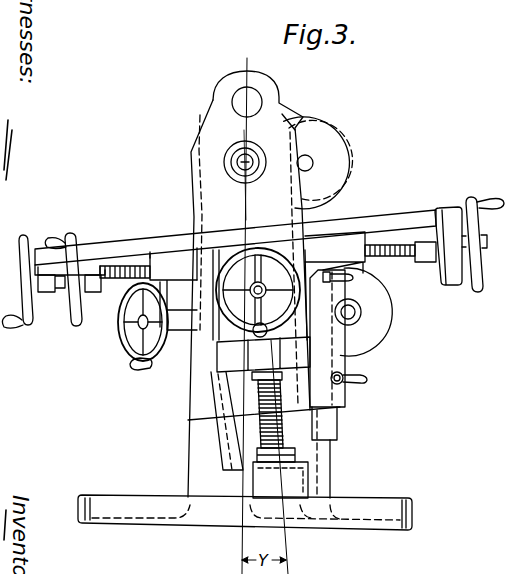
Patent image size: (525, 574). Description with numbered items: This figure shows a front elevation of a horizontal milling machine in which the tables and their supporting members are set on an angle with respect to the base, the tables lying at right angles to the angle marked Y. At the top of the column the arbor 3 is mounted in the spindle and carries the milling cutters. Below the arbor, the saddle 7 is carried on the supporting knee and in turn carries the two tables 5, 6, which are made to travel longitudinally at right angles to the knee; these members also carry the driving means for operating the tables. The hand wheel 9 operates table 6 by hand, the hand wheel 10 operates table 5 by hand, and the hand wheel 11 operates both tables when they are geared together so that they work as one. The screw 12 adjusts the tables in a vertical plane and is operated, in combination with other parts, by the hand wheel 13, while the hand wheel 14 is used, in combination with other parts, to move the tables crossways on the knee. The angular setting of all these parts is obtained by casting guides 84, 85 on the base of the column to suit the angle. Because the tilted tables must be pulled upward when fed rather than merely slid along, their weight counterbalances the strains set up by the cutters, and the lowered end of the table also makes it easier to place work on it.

The arbor 3 is at (238, 158).
The table 5 is at (94, 292).
The table 6 is at (47, 292).
The saddle 7 is at (163, 250).
The hand wheel 9 is at (26, 236).
The hand wheel 10 is at (71, 232).
The hand wheel 11 is at (482, 292).
The screw 12 is at (283, 420).
The hand wheel 13 is at (127, 343).
The hand wheel 14 is at (297, 320).
The guide 84 is at (220, 438).
The guide 85 is at (333, 416).